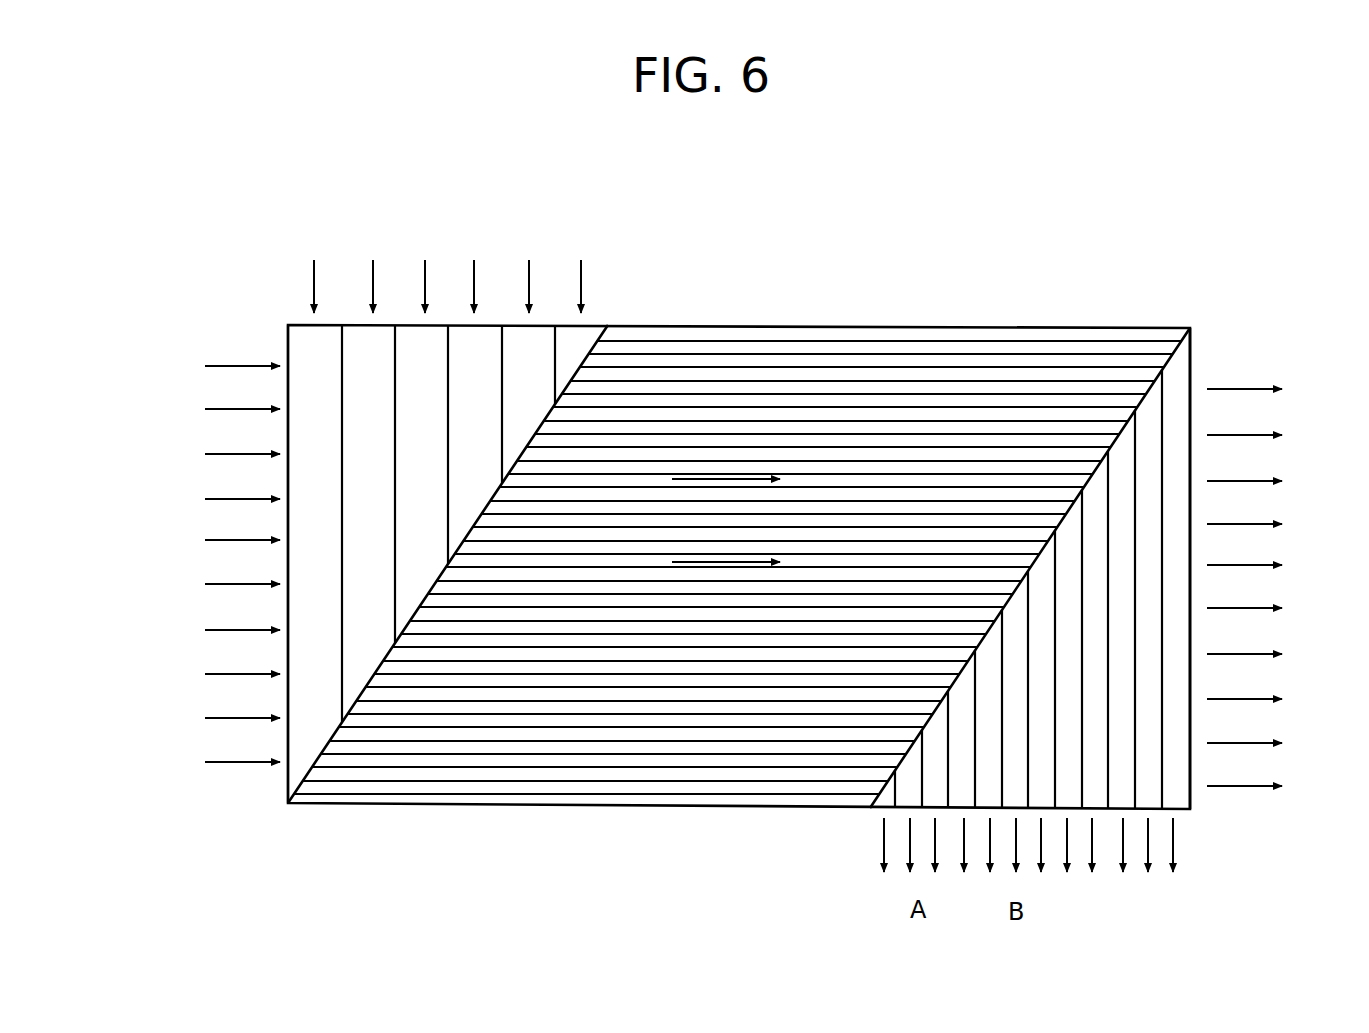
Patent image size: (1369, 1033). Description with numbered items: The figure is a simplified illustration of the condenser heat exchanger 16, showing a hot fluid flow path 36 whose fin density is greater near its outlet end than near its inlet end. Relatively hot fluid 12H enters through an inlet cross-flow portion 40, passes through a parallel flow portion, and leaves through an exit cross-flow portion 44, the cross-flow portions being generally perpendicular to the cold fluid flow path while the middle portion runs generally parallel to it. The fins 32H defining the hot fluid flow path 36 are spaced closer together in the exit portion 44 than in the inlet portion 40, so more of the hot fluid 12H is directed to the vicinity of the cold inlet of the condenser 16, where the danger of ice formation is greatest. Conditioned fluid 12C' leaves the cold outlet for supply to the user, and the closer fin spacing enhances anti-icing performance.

The condenser heat exchanger 16 is at (1036, 287).
The inlet cross-flow portion 40 is at (302, 348).
The fins 32H is at (587, 327).
The hot fluid flow path 36 is at (1150, 667).
The exit cross-flow portion 44 is at (1177, 768).
The relatively hot fluid 12H is at (530, 300).
The conditioned fluid 12C' is at (764, 549).